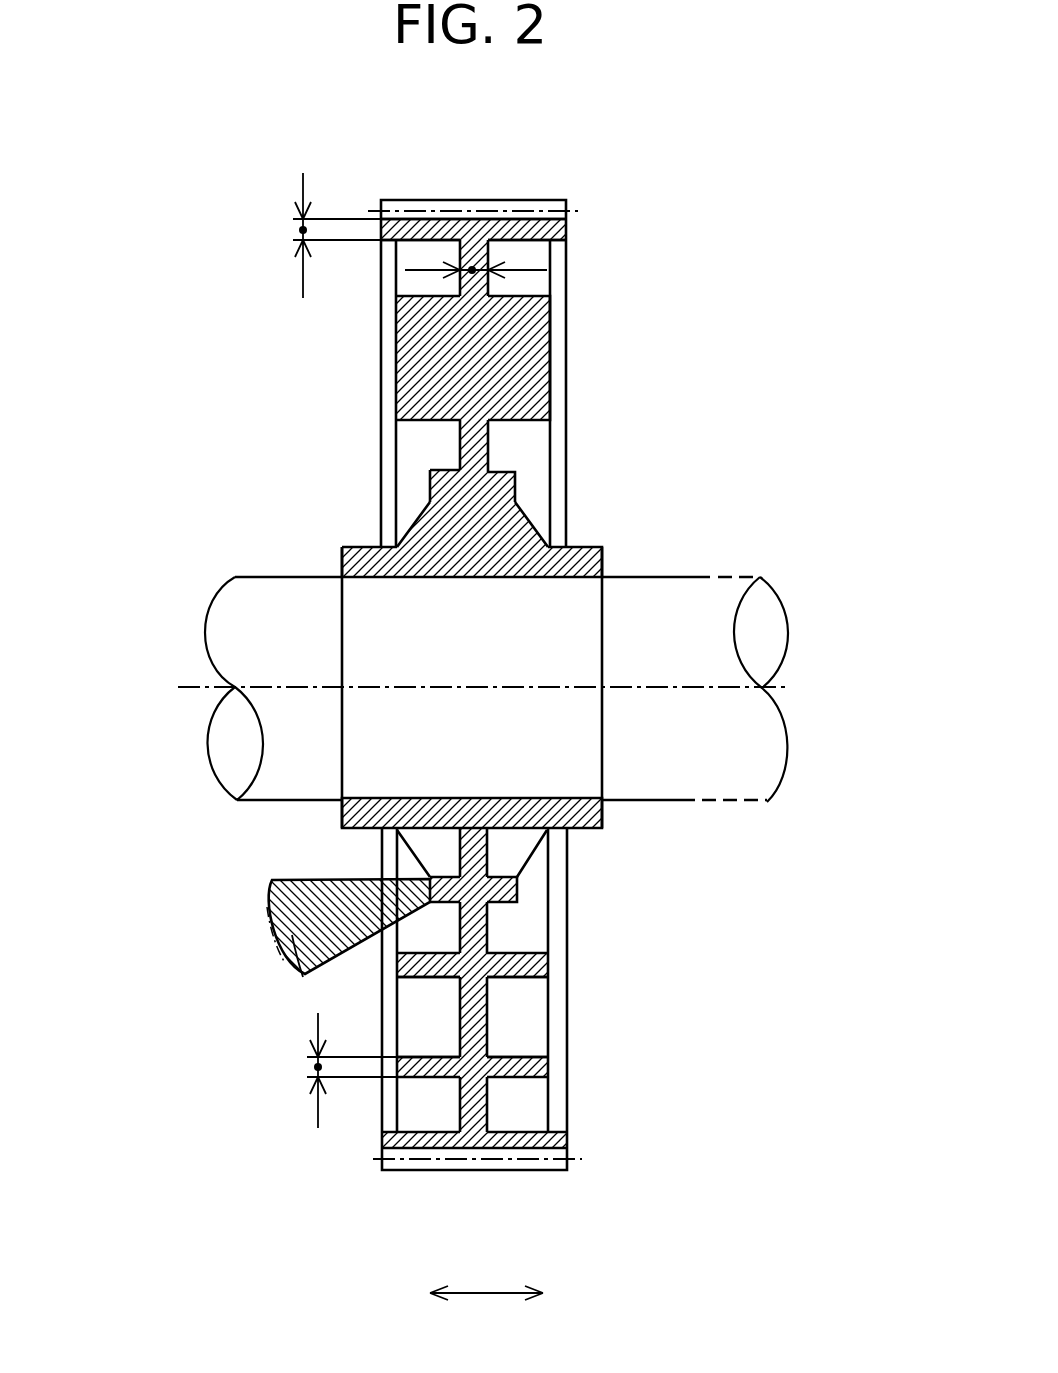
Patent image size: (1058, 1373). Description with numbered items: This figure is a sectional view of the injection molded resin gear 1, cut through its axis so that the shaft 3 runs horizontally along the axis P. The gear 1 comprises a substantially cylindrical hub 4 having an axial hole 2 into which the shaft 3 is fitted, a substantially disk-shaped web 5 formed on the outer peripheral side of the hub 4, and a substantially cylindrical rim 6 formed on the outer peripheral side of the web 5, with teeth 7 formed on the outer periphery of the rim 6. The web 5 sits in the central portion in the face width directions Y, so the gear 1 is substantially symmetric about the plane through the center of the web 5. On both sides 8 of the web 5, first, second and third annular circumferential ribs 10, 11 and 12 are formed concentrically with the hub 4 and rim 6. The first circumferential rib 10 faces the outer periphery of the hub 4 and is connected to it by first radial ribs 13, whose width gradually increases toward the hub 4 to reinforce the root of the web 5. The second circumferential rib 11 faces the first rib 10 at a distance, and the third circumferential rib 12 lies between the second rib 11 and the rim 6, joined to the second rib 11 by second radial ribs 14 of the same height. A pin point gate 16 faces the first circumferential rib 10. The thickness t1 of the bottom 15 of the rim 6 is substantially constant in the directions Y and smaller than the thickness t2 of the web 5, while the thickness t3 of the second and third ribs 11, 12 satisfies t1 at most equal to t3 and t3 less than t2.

The injection molded resin gear 1 is at (587, 231).
The axial hole 2 is at (370, 580).
The shaft 3 is at (707, 577).
The hub 4 is at (587, 548).
The web 5 is at (475, 433).
The rim 6 is at (415, 240).
The teeth 7 is at (418, 200).
The sides of the web 8 is at (488, 448).
The first circumferential rib 10 is at (518, 893).
The second circumferential rib 11 is at (543, 967).
The third circumferential rib 12 is at (543, 1063).
The first radial ribs 13 is at (508, 848).
The second radial ribs 14 is at (433, 1023).
The bottom of the rim 15 is at (486, 220).
The pin point gates 16 is at (372, 888).
The axis of rotation P is at (188, 687).
The thickness of the bottom of the rim t1 is at (303, 230).
The thickness of the web t2 is at (488, 268).
The thickness of the second and third circumferential ribs t3 is at (318, 1067).
The face width directions Y is at (486, 1317).